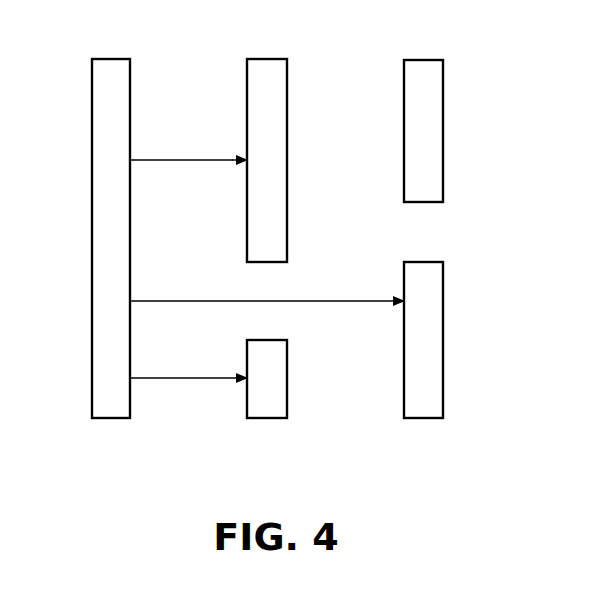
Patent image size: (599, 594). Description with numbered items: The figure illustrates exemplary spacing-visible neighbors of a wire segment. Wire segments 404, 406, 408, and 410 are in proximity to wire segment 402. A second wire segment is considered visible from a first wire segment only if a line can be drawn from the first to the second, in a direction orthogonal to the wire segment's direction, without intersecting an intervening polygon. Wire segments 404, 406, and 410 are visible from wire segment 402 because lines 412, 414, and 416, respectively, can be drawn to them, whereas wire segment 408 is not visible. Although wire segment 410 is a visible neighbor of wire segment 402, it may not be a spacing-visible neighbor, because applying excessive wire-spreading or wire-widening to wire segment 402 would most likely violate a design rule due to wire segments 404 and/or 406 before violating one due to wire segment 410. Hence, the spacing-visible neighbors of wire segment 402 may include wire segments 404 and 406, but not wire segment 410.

The wire segment 402 is at (111, 224).
The wire segment 404 is at (267, 146).
The wire segment 406 is at (267, 394).
The wire segment 408 is at (423, 116).
The wire segment 410 is at (423, 355).
The line 412 is at (188, 145).
The line 414 is at (188, 363).
The line 416 is at (267, 285).